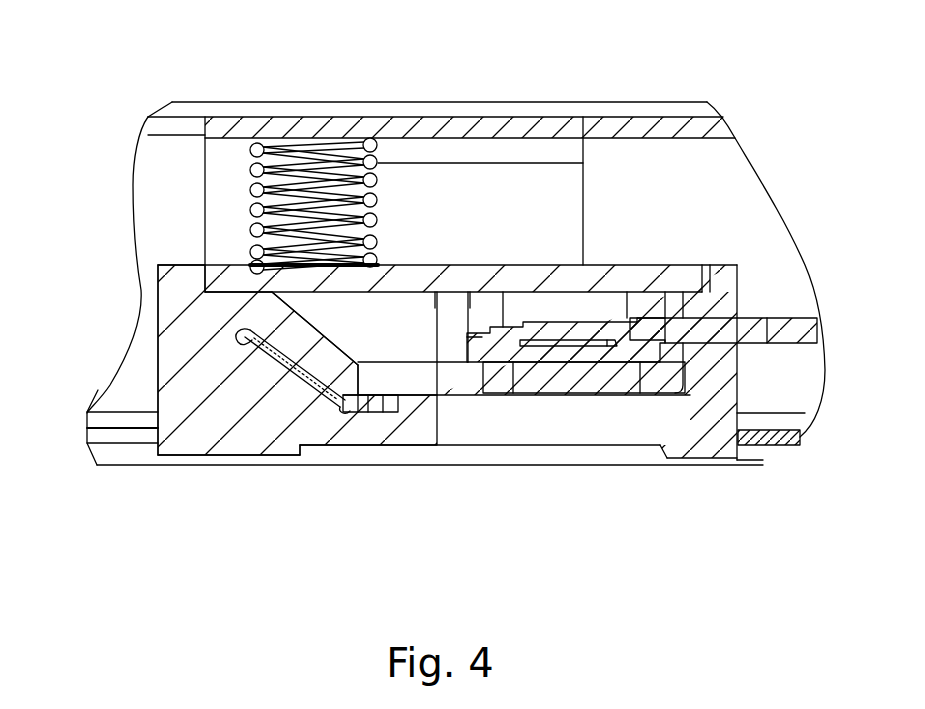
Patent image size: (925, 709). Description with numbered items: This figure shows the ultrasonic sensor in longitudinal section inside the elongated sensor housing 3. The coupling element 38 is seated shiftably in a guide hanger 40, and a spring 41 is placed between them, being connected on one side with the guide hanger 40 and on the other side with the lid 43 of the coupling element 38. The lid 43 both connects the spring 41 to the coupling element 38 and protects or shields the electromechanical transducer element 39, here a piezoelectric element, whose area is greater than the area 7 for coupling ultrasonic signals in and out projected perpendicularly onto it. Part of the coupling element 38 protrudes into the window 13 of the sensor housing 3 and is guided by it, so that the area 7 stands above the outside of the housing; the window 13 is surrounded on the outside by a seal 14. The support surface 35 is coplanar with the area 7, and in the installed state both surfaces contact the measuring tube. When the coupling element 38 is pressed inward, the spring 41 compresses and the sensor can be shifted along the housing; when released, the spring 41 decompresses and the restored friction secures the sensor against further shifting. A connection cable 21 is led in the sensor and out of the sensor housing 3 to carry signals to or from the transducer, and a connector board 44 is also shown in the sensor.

The sensor housing 3 is at (352, 110).
The area for coupling ultrasonic signals in and out 7 is at (212, 458).
The window 13 is at (113, 438).
The seal 14 is at (768, 460).
The connection cable 21 is at (613, 333).
The support surface 35 is at (688, 458).
The coupling element 38 is at (178, 352).
The electromechanical transducer element 39 is at (307, 370).
The guide hanger 40 is at (528, 127).
The spring 41 is at (253, 163).
The lid of the coupling element 43 is at (633, 273).
The connector board 44 is at (497, 353).